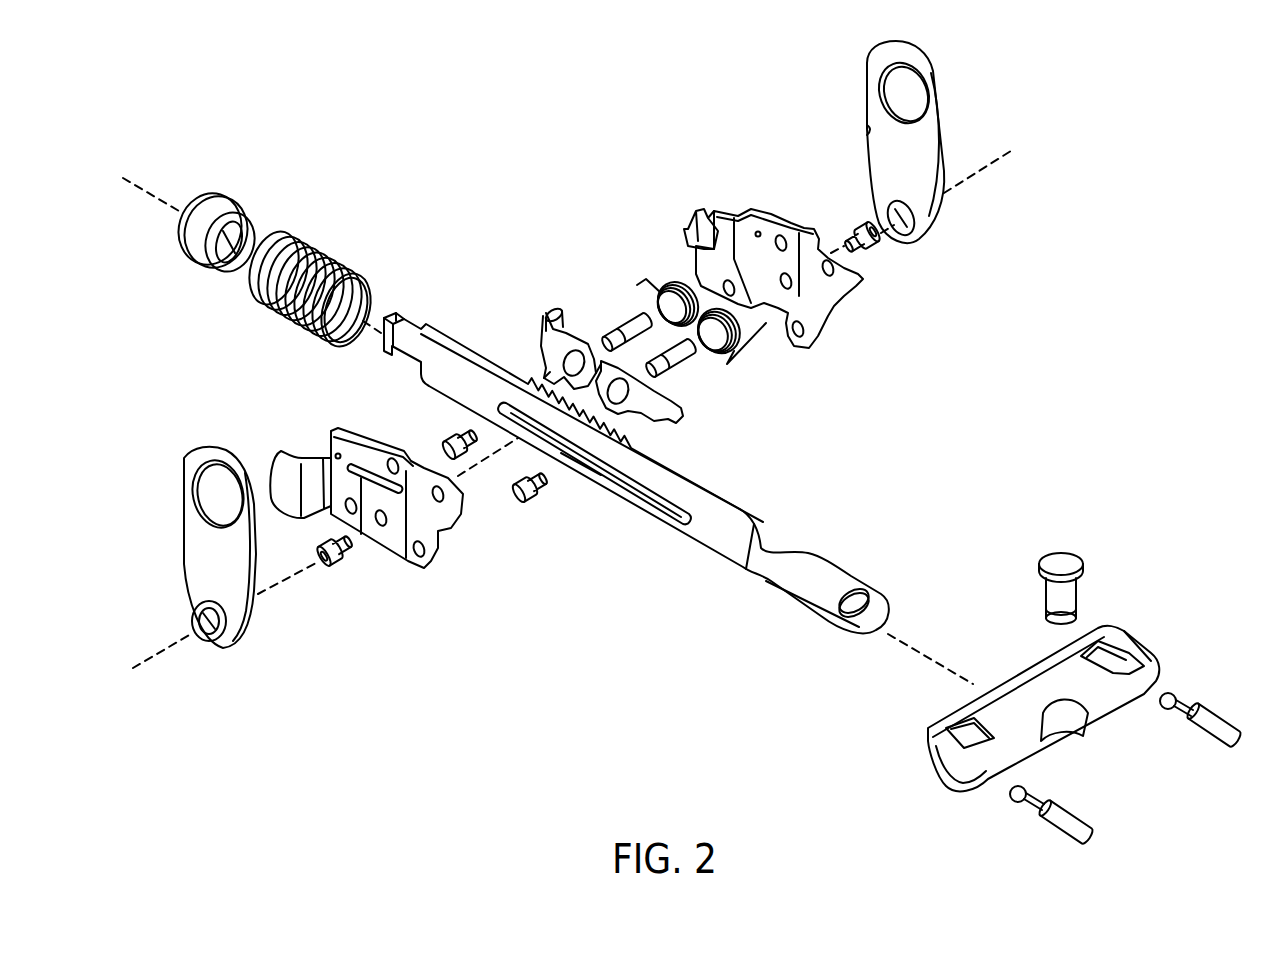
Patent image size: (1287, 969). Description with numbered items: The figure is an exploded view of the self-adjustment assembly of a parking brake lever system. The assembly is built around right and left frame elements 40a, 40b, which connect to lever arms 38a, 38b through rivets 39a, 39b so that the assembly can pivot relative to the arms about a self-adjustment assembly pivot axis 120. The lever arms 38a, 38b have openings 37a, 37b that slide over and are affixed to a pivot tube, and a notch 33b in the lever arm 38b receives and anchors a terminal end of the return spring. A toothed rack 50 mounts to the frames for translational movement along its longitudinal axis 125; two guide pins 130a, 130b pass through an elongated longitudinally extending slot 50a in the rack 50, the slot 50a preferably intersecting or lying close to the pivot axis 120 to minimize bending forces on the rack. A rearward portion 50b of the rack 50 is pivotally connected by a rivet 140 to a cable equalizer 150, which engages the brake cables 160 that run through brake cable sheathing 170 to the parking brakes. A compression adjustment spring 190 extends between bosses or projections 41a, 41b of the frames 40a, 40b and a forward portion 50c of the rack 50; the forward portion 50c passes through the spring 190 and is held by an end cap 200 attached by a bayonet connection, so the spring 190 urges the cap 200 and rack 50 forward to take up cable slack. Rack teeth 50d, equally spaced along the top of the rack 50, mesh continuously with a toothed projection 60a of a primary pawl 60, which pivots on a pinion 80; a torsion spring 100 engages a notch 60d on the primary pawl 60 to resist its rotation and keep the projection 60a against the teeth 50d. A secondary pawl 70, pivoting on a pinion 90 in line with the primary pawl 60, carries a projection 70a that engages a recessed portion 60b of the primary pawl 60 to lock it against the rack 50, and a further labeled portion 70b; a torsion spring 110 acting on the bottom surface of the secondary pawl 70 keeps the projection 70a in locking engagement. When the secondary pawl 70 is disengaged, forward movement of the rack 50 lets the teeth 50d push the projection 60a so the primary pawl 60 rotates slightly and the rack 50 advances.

The notch 33b is at (868, 132).
The opening 37a is at (200, 480).
The opening 37b is at (895, 82).
The lever arm 38a is at (178, 547).
The lever arm 38b is at (907, 142).
The rivet 39a is at (325, 563).
The rivet 39b is at (872, 252).
The right frame element 40a is at (355, 509).
The left frame element 40b is at (787, 259).
The boss 41a is at (285, 452).
The boss 41b is at (700, 210).
The toothed rack 50 is at (636, 442).
The elongated slot 50a is at (667, 512).
The rearward portion 50b is at (835, 573).
The forward portion 50c is at (398, 318).
The rack teeth 50d is at (625, 452).
The primary pawl 60 is at (551, 321).
The toothed projection 60a is at (540, 372).
The recessed portion 60b is at (597, 355).
The notch 60d is at (570, 310).
The secondary pawl 70 is at (641, 475).
The projection 70a is at (598, 374).
The pivot hole 70b is at (668, 418).
The pinion 80 is at (622, 315).
The pinion 90 is at (683, 370).
The torsion spring 100 is at (670, 280).
The torsion spring 110 is at (745, 352).
The self-adjustment assembly pivot axis 120 is at (168, 645).
The longitudinal axis 125 is at (143, 183).
The guide pin 130a is at (447, 437).
The guide pin 130b is at (527, 503).
The rivet 140 is at (1060, 553).
The cable equalizer 150 is at (1117, 640).
The brake cable 160 is at (1183, 707).
The brake cable sheathing 170 is at (1225, 722).
The compression adjustment spring 190 is at (317, 243).
The end cap 200 is at (215, 192).